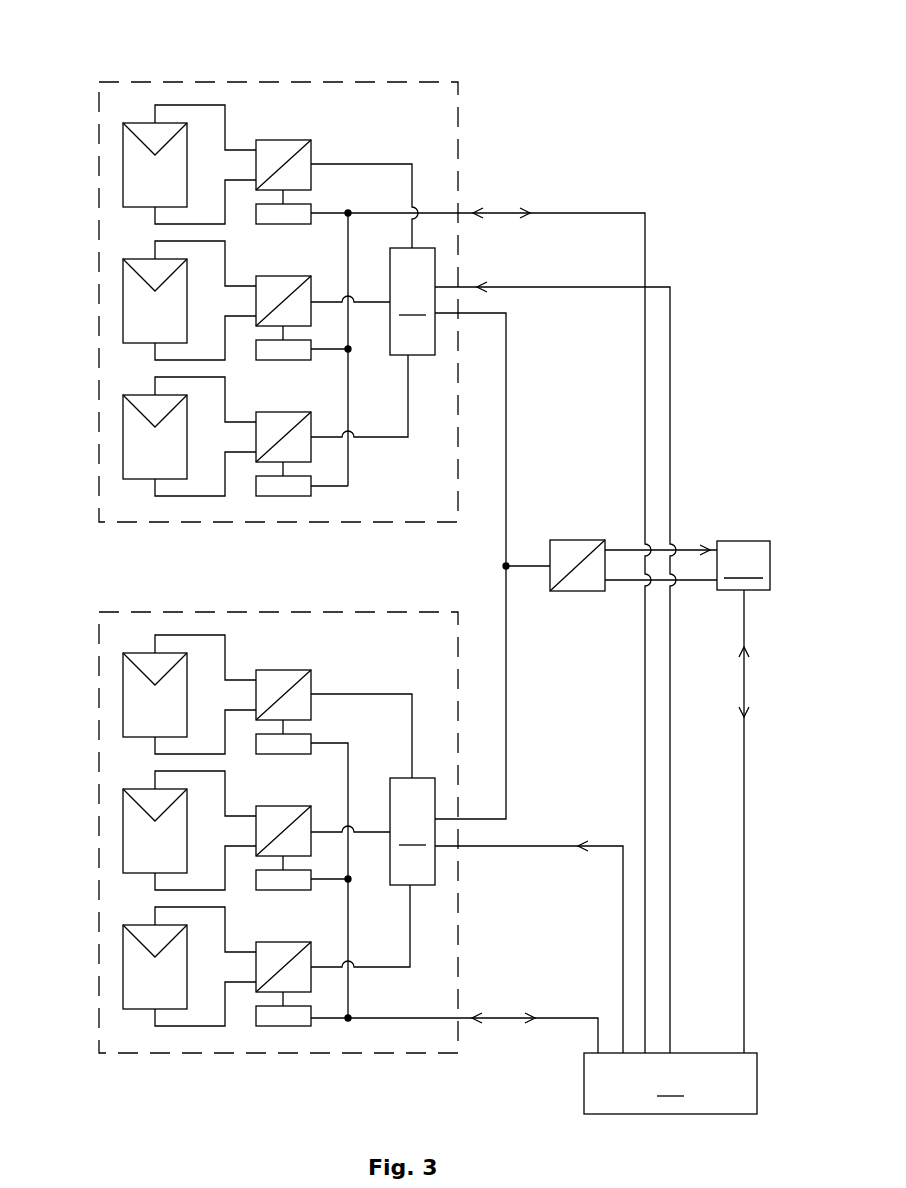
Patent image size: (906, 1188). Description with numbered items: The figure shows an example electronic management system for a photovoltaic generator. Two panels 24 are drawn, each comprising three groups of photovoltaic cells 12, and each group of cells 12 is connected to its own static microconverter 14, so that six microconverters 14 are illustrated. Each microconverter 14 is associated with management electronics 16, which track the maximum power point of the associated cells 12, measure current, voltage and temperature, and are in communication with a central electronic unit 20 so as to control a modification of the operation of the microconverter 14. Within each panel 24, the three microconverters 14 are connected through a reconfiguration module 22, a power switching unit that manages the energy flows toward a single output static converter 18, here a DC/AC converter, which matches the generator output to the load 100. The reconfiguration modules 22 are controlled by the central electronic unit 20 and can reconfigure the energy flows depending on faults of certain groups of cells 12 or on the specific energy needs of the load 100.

The photovoltaic cell 12 is at (135, 180).
The microconverter 14 is at (290, 140).
The management electronics 16 is at (273, 224).
The output static converter 18 is at (585, 540).
The central electronic unit 20 is at (670, 1083).
The reconfiguration module 22 is at (412, 566).
The panel 24 is at (377, 120).
The load 100 is at (743, 565).